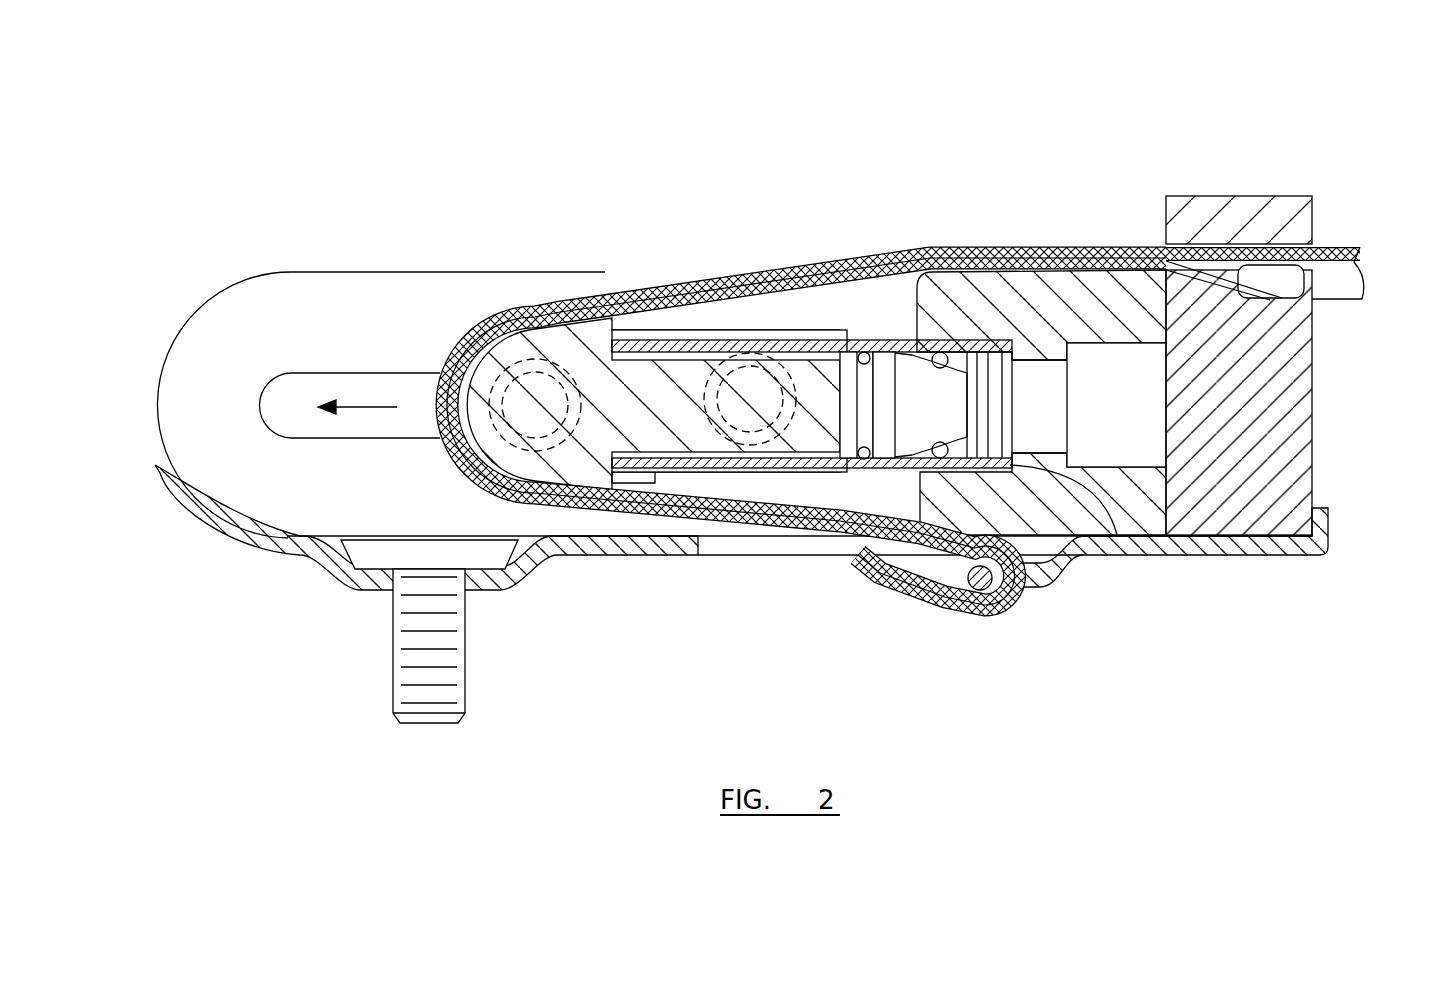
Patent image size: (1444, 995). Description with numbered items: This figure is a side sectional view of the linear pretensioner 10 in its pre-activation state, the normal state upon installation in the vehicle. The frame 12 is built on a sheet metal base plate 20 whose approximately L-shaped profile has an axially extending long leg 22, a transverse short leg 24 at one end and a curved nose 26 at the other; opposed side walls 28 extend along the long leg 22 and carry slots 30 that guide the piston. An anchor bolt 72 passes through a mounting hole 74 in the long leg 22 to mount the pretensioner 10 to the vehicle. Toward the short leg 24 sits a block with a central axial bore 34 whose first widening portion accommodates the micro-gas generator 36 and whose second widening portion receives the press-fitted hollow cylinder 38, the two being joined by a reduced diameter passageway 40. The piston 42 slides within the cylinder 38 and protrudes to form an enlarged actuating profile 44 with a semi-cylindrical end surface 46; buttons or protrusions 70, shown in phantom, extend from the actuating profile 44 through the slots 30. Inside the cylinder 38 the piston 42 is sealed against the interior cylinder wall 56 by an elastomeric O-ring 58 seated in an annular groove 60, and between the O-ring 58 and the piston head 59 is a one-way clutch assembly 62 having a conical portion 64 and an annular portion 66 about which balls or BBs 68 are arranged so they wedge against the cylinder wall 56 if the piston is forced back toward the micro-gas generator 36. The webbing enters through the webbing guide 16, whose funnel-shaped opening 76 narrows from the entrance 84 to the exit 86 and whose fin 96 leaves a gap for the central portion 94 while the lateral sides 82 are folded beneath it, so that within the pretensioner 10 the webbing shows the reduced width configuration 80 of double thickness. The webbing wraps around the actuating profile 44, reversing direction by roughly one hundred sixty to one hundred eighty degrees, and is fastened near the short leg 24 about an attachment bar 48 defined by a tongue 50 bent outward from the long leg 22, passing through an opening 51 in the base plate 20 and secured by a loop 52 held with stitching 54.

The linear pretensioner 10 is at (332, 170).
The frame 12 is at (172, 298).
The seatbelt webbing guide 16 is at (1238, 508).
The base plate 20 is at (669, 564).
The long leg 22 is at (587, 557).
The short leg 24 is at (1322, 534).
The curved nose 26 is at (166, 490).
The side walls 28 is at (256, 315).
The slots 30 is at (370, 386).
The central axial bore 34 is at (1168, 507).
The micro-gas generator 36 is at (1125, 373).
The hollow cylinder 38 is at (655, 474).
The reduced diameter passageway 40 is at (979, 373).
The piston 42 is at (803, 440).
The actuating profile 44 is at (582, 362).
The semi-cylindrical end surface 46 is at (497, 310).
The attachment bar 48 is at (960, 611).
The tongue 50 is at (1040, 578).
The opening 51 is at (727, 548).
The loop 52 is at (908, 645).
The stitching 54 is at (873, 512).
The interior cylinder wall 56 is at (720, 360).
The elastomeric O-ring 58 is at (863, 462).
The head 59 is at (960, 370).
The annular groove 60 is at (847, 377).
The one-way clutch assembly 62 is at (1078, 571).
The conical portion 64 is at (895, 592).
The annular portion 66 is at (933, 353).
The balls or BBs 68 is at (890, 370).
The buttons or protrusions 70 is at (538, 358).
The anchor bolt 72 is at (420, 636).
The mounting hole 74 is at (357, 412).
The opening 76 is at (1228, 250).
The reduced width configuration 80 is at (1048, 244).
The lateral sides 82 is at (865, 383).
The entrance 84 is at (1313, 245).
The exit 86 is at (1163, 244).
The central portion 94 is at (651, 288).
The fin 96 is at (1280, 287).